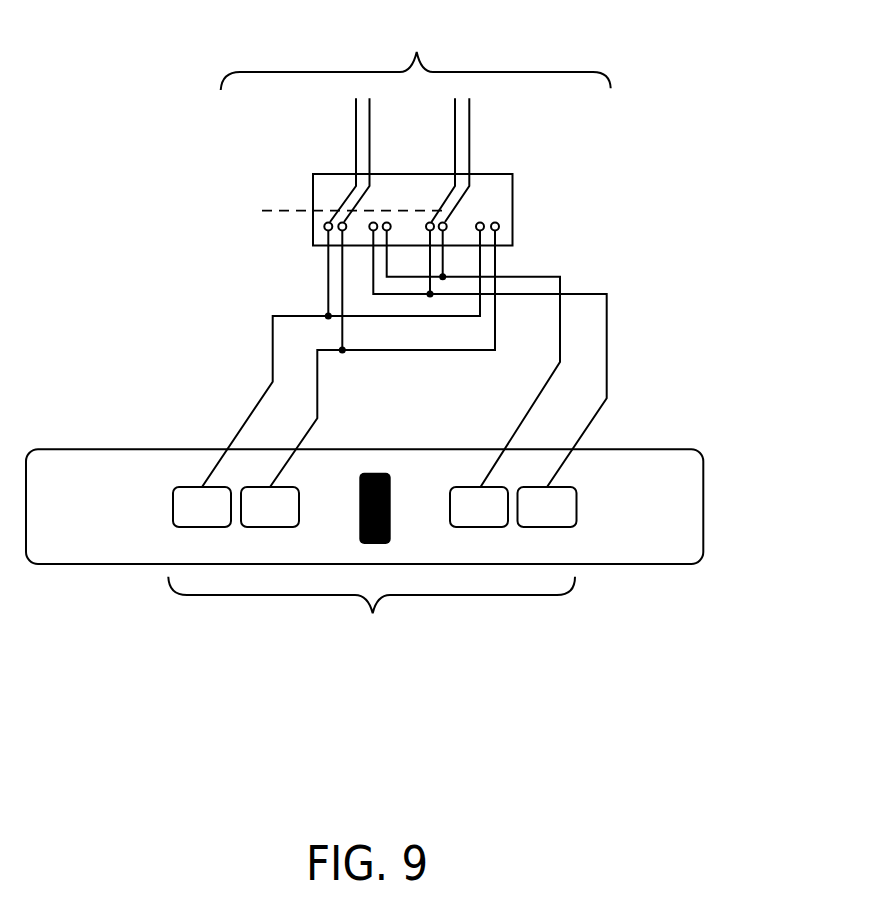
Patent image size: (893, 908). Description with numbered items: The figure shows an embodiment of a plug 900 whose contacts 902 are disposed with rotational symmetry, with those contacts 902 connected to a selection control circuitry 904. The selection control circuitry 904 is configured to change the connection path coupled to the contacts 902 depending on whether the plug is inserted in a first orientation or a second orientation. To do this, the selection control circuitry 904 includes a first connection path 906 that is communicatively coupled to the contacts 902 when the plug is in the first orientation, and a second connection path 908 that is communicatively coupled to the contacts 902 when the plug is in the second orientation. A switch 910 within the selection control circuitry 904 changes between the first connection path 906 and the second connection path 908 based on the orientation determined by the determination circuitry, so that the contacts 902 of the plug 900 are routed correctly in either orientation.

The plug 900 is at (703, 506).
The contacts 902 is at (371, 615).
The selection control circuitry 904 is at (416, 119).
The first connection path 906 is at (429, 270).
The second connection path 908 is at (498, 263).
The switch 910 is at (512, 187).